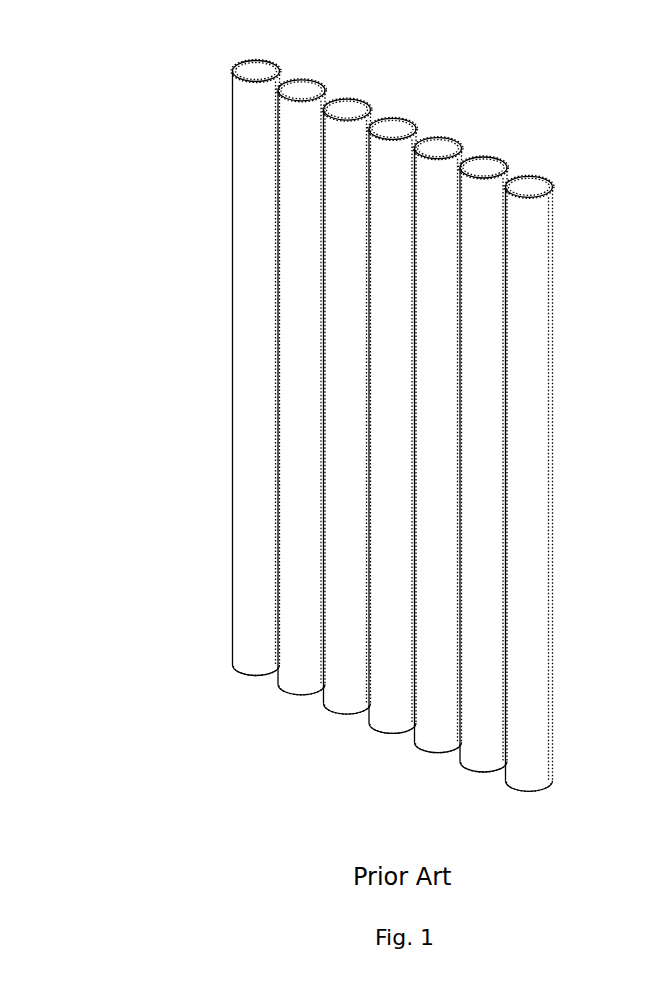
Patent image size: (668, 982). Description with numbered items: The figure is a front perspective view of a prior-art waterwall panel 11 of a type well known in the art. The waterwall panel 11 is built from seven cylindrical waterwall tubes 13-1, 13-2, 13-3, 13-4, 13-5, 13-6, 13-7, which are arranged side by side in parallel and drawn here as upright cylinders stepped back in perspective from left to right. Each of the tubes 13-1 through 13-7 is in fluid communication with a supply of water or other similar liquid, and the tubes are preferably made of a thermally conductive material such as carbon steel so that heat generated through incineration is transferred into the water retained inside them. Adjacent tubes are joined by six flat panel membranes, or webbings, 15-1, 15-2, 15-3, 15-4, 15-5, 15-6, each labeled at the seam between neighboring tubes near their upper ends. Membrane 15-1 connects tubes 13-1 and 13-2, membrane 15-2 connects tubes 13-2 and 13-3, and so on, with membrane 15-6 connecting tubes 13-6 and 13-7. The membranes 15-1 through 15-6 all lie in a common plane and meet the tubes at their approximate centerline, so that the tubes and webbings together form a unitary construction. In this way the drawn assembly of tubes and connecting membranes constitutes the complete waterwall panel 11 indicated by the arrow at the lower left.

The waterwall panel 11 is at (118, 743).
The cylindrical waterwall tube 13-1 is at (260, 386).
The cylindrical waterwall tube 13-2 is at (311, 400).
The cylindrical waterwall tube 13-3 is at (382, 423).
The cylindrical waterwall tube 13-4 is at (431, 440).
The cylindrical waterwall tube 13-5 is at (486, 456).
The cylindrical waterwall tube 13-6 is at (545, 491).
The cylindrical waterwall tube 13-7 is at (538, 430).
The flat panel membrane 15-1 is at (283, 73).
The flat panel membrane 15-2 is at (328, 100).
The flat panel membrane 15-3 is at (372, 117).
The flat panel membrane 15-4 is at (418, 137).
The flat panel membrane 15-5 is at (465, 157).
The flat panel membrane 15-6 is at (510, 177).